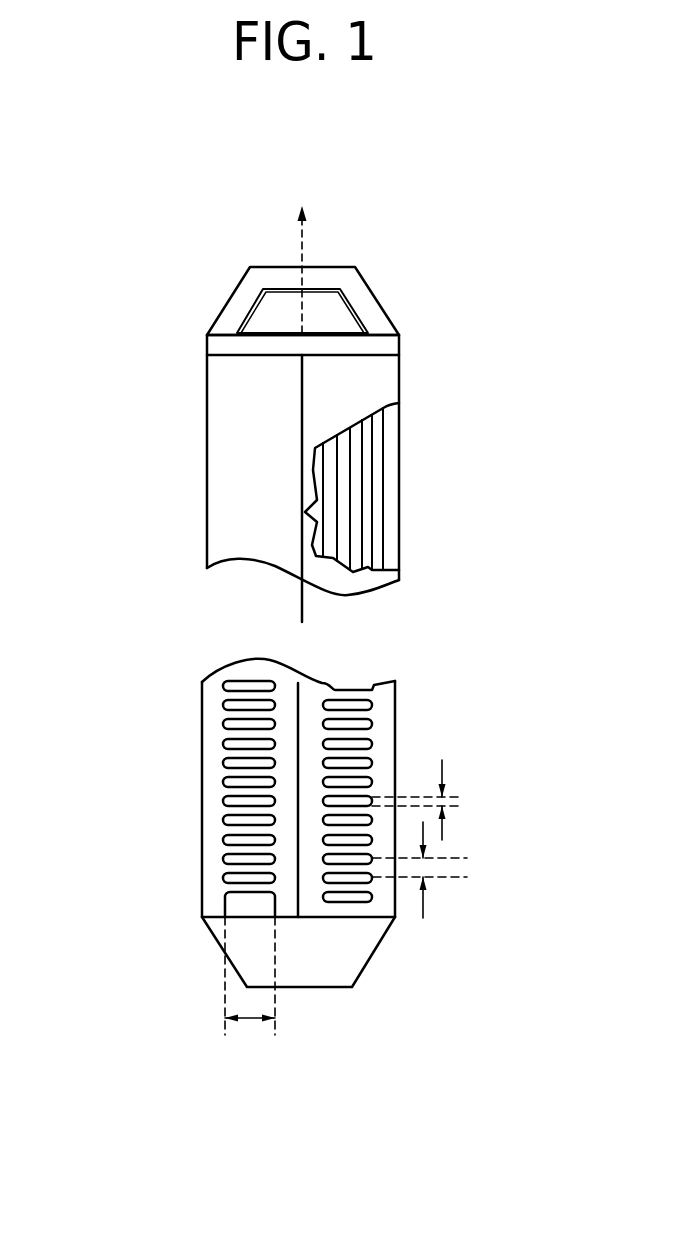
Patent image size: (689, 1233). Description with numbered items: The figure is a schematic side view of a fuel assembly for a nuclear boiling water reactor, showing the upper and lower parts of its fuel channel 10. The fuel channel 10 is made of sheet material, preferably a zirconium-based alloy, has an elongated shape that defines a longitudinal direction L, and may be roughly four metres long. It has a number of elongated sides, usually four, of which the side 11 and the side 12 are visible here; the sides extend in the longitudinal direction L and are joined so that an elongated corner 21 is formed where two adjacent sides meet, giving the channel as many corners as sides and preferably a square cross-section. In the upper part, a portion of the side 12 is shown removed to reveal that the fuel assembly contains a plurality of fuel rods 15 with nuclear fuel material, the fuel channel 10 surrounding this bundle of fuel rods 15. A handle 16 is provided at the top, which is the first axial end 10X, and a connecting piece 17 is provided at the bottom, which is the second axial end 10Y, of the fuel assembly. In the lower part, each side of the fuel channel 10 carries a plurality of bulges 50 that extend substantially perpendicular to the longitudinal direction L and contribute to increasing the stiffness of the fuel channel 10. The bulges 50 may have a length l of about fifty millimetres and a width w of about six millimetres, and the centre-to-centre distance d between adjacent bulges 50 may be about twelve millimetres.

The fuel channel 10 is at (387, 367).
The first axial end 10X is at (191, 341).
The second axial end 10Y is at (180, 931).
The side 11 is at (222, 465).
The side 12 is at (385, 392).
The fuel rods 15 is at (310, 512).
The handle 16 is at (360, 302).
The connecting piece 17 is at (377, 949).
The corner 21 is at (302, 390).
The bulges 50 is at (372, 745).
The longitudinal direction L is at (311, 270).
The width w is at (419, 800).
The distance d is at (420, 870).
The length l is at (248, 1018).